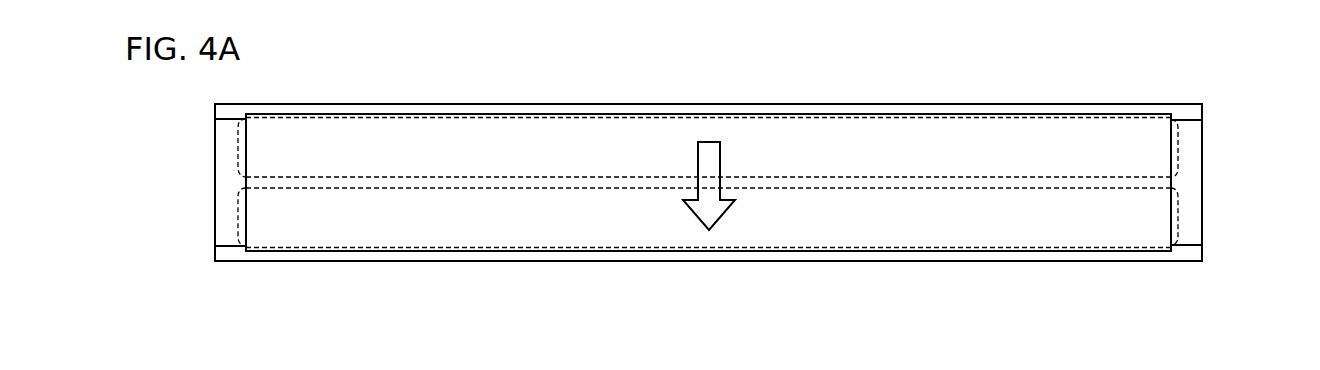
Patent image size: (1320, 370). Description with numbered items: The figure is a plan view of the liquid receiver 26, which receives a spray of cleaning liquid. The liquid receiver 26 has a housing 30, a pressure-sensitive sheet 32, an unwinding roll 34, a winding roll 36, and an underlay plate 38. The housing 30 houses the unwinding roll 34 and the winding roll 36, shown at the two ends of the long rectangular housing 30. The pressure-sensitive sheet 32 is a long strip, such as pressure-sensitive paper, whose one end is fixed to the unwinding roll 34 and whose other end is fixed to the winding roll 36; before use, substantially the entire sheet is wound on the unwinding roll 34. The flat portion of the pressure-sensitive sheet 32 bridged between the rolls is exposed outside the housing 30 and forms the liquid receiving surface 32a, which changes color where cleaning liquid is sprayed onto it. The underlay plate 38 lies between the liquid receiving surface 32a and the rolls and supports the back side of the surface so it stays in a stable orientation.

The liquid receiver 26 is at (722, 338).
The housing 30 is at (1196, 104).
The pressure-sensitive sheet 32 is at (1174, 182).
The liquid receiving surface 32a is at (1017, 203).
The unwinding roll 34 is at (238, 152).
The winding roll 36 is at (238, 222).
The underlay plate 38 is at (1195, 226).